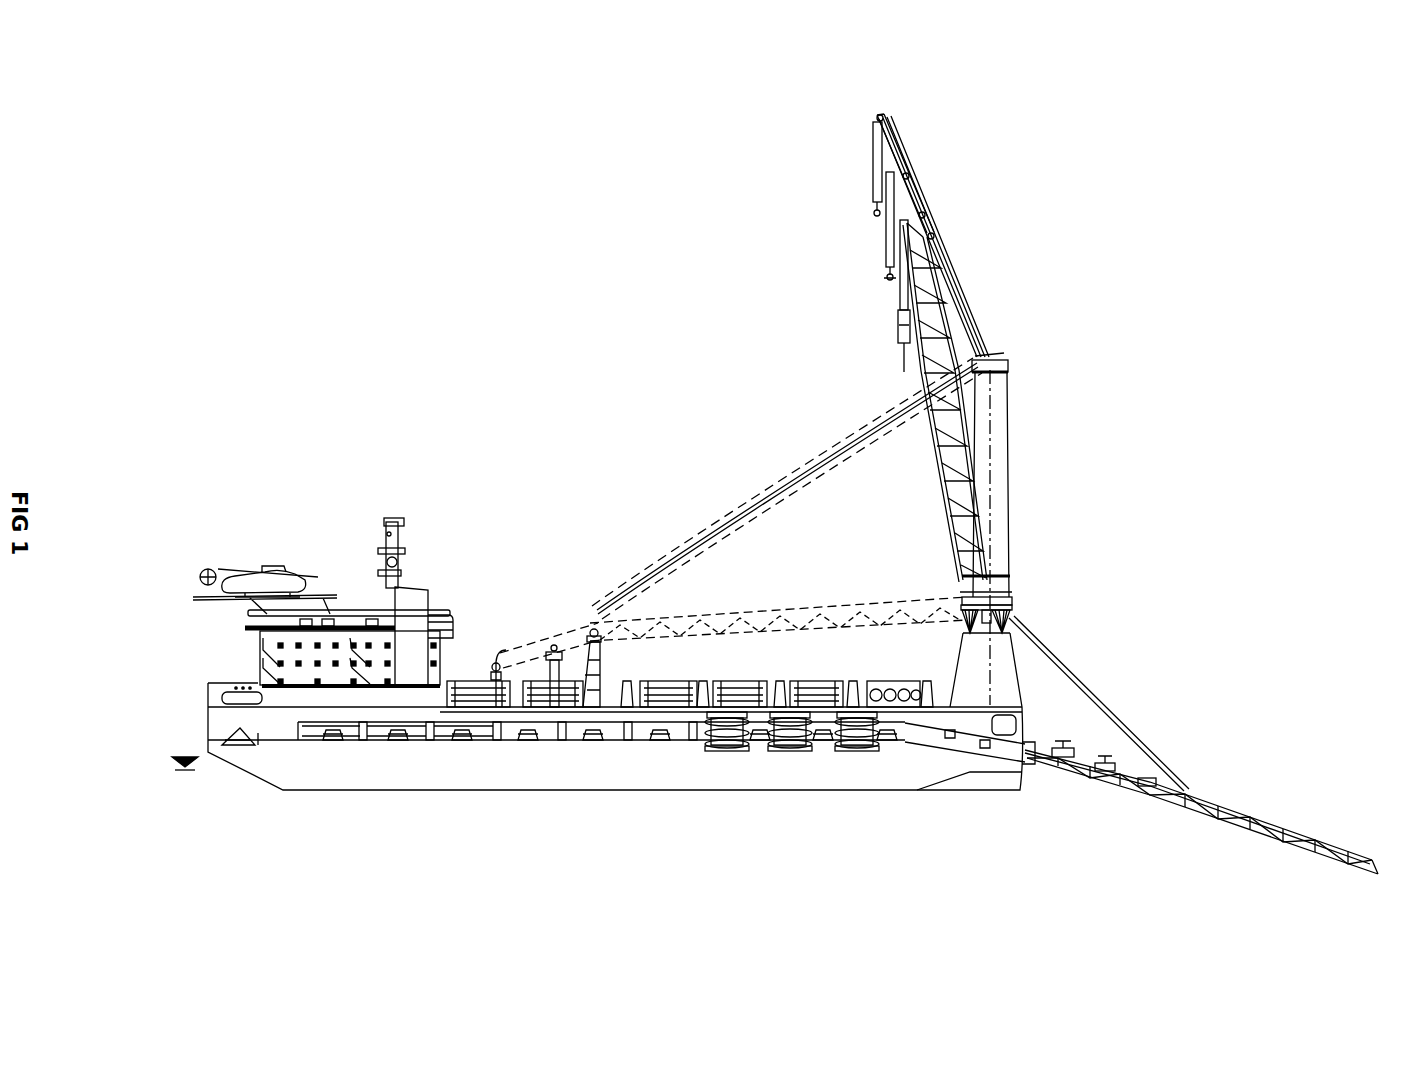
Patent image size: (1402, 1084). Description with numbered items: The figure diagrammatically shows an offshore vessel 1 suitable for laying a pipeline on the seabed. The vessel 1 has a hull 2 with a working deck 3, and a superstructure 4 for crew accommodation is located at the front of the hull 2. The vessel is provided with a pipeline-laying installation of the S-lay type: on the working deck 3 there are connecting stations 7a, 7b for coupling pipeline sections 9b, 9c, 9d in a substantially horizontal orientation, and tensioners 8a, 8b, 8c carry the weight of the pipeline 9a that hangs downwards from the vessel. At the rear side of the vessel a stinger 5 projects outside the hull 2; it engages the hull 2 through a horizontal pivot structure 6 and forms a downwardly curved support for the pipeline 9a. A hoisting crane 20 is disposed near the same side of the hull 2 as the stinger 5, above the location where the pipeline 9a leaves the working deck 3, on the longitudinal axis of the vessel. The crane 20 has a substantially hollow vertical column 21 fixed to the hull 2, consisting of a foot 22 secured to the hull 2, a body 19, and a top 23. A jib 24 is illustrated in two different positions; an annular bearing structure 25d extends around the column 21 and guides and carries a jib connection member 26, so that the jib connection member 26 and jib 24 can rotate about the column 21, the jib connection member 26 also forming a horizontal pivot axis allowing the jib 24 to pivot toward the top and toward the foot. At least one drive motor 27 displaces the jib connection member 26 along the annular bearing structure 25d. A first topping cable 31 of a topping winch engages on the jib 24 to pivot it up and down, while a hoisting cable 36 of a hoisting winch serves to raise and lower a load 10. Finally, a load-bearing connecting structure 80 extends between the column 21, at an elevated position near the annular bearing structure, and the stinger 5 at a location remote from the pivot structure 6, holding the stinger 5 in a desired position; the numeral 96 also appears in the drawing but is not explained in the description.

The offshore vessel 1 is at (587, 518).
The hull 2 is at (598, 792).
The working deck 3 is at (543, 742).
The superstructure 4 is at (440, 572).
The stinger 5 is at (1250, 795).
The horizontal pivot structure 6 is at (1028, 770).
The connecting station 7a is at (500, 742).
The connecting station 7b is at (555, 742).
The tensioner 8a is at (727, 751).
The tensioner 8b is at (790, 751).
The tensioner 8c is at (857, 751).
The pipeline 9a is at (1075, 750).
The pipeline section 9b is at (343, 745).
The pipeline section 9c is at (402, 745).
The pipeline section 9d is at (463, 745).
The load 10 is at (882, 678).
The body 19 is at (1004, 447).
The hoisting crane 20 is at (872, 362).
The substantially hollow vertical column 21 is at (1050, 469).
The foot 22 is at (1020, 618).
The top 23 is at (998, 360).
The jib 24 is at (943, 462).
The annular bearing structure 25d is at (1018, 608).
The jib connection member 26 is at (1014, 598).
The drive motor 27 is at (963, 613).
The first topping cable 31 is at (742, 518).
The hoisting cable 36 is at (805, 492).
The load-bearing connecting structure 80 is at (1078, 682).
The helideck 96 is at (205, 682).